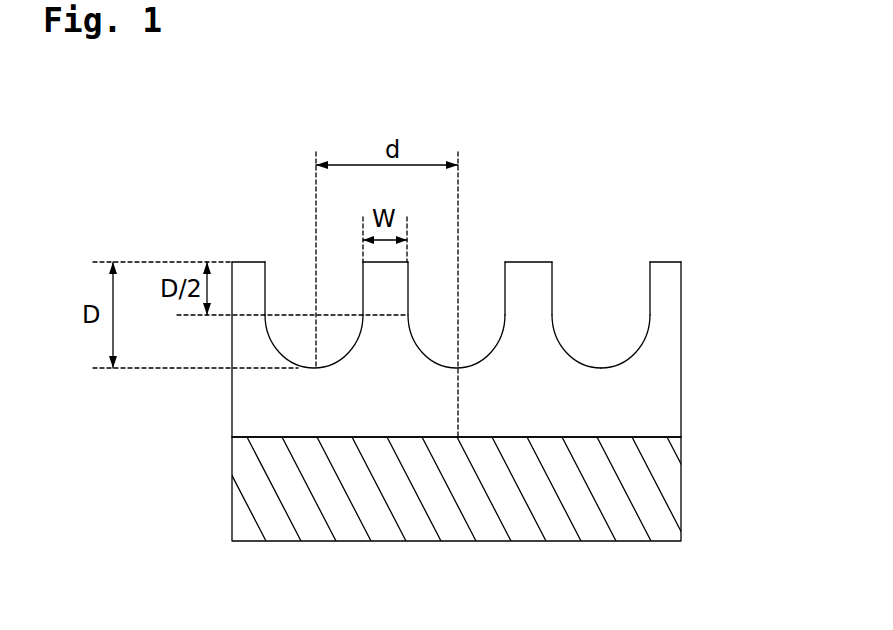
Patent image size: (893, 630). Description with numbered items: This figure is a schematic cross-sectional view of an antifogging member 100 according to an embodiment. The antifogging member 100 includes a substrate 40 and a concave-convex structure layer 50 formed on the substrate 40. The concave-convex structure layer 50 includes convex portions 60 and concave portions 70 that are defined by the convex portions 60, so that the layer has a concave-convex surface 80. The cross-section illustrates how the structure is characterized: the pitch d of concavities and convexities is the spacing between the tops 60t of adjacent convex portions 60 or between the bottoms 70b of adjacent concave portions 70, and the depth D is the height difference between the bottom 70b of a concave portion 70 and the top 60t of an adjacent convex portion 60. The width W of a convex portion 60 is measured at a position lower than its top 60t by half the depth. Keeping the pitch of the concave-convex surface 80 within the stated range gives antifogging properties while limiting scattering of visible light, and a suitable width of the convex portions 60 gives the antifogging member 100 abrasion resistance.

The antifogging member 100 is at (679, 166).
The concave-convex structure layer 50 is at (653, 400).
The substrate 40 is at (658, 490).
The convex portion 60 is at (540, 277).
The top of convex portion 60t is at (530, 260).
The concave portion 70 is at (600, 368).
The bottom of concave portion 70b is at (316, 368).
The concave-convex surface 80 is at (643, 343).